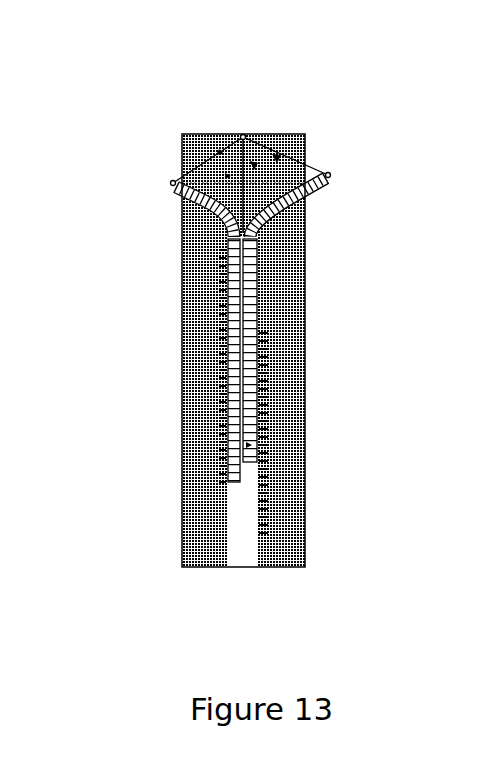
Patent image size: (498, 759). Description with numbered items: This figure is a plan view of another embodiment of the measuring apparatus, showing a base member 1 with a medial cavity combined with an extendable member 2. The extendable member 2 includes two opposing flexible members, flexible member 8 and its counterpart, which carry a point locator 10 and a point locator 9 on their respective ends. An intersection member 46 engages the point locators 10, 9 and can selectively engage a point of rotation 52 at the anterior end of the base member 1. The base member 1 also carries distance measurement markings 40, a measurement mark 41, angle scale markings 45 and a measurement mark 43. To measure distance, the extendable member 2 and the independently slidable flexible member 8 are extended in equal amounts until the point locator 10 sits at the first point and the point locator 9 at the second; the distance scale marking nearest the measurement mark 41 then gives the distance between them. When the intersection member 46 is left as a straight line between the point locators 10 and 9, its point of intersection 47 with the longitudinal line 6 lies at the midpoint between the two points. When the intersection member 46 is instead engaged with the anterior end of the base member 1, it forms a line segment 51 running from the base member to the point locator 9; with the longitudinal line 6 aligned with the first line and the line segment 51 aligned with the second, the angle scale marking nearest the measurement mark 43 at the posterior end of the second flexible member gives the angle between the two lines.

The base member 1 is at (307, 382).
The extendable member 2 is at (255, 422).
The longitudinal line 6 is at (236, 162).
The flexible member 8 is at (215, 218).
The point locator 9 is at (337, 175).
The point locator 10 is at (160, 187).
The distance measurement markings 40 is at (202, 438).
The measurement mark 41 is at (225, 462).
The measurement mark 43 is at (253, 458).
The angle scale markings 45 is at (280, 335).
The intersection member 46 is at (222, 147).
The point of intersection 47 is at (233, 176).
The line segment 51 is at (291, 140).
The point of rotation 52 is at (234, 126).